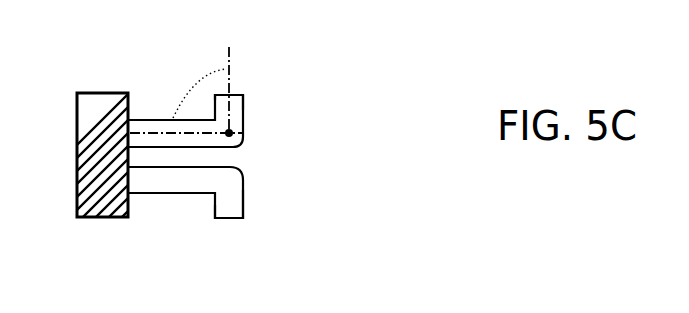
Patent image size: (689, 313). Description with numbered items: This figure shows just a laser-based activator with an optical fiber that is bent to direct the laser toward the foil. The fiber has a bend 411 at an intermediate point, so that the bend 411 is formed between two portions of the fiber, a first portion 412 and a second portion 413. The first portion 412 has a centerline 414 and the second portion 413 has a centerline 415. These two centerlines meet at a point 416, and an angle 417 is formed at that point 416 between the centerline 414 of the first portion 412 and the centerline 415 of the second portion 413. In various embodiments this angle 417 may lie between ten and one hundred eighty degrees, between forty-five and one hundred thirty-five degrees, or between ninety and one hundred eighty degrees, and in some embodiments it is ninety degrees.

The bend 411 is at (234, 146).
The first portion 412 is at (157, 180).
The second portion 413 is at (237, 202).
The centerline of the first portion 414 is at (152, 120).
The centerline of the second portion 415 is at (229, 80).
The point 416 is at (233, 133).
The angle 417 is at (188, 95).